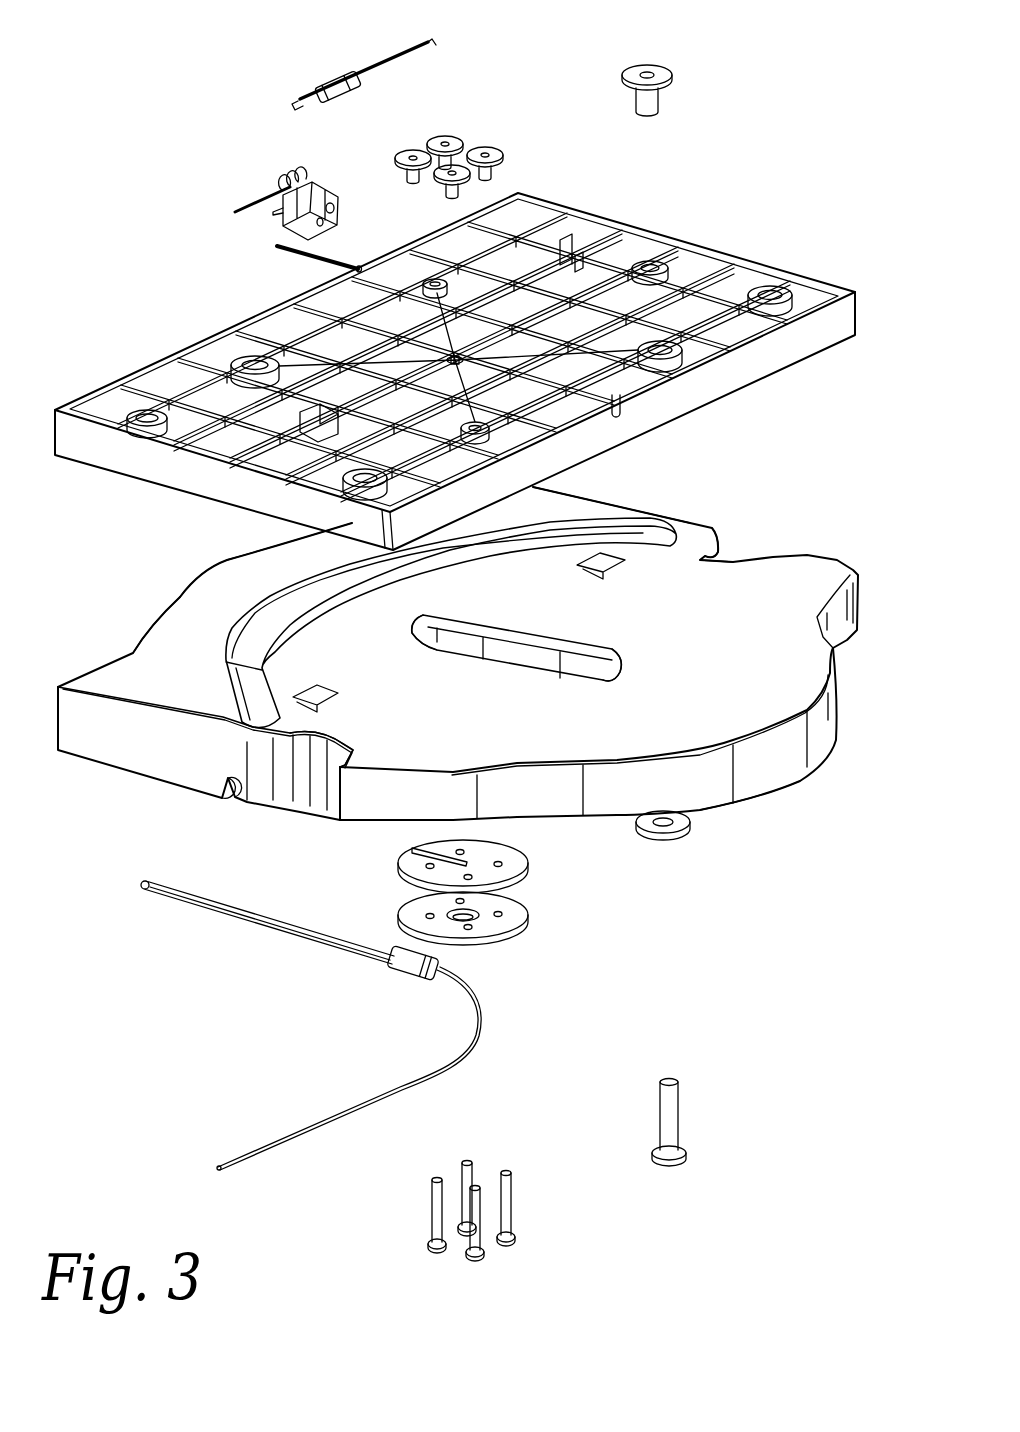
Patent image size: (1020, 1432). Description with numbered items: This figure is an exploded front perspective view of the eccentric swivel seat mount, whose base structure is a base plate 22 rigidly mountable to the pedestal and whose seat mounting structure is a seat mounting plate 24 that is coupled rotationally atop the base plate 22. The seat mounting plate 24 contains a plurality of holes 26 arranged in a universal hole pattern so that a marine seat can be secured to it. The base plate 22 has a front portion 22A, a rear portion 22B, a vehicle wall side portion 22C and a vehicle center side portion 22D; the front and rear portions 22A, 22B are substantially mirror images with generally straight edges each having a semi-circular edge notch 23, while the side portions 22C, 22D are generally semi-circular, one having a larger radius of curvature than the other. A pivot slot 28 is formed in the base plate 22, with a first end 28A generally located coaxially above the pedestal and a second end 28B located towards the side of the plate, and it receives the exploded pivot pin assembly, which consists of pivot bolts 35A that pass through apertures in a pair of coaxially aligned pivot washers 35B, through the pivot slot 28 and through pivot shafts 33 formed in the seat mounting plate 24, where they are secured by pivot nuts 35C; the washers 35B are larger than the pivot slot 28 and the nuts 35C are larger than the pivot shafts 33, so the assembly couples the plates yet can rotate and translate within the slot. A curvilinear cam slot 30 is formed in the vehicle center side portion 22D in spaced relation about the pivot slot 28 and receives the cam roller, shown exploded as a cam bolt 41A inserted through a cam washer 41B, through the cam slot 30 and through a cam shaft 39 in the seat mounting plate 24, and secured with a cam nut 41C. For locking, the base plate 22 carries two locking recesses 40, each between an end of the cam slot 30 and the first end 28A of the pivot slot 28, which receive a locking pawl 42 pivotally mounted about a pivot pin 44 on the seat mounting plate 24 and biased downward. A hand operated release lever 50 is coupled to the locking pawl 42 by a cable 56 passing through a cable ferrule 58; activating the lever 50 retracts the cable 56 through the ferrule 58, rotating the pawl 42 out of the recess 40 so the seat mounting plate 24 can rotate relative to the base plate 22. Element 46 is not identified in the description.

The base plate 22 is at (853, 610).
The front portion 22A is at (200, 703).
The rear portion 22B is at (637, 517).
The vehicle wall side portion 22C is at (757, 703).
The vehicle center side portion 22D is at (265, 567).
The semi-circular edge notch 23 is at (720, 553).
The seat mounting plate 24 is at (850, 311).
The holes 26 is at (251, 357).
The pivot slot 28 is at (561, 647).
The first end 28A is at (455, 612).
The second end 28B is at (615, 668).
The cam slot 30 is at (242, 633).
The pivot shafts 33 is at (450, 358).
The pivot bolts 35A is at (515, 1229).
The pivot washers 35B is at (530, 905).
The pivot nuts 35C is at (492, 148).
The cam shaft 39 is at (650, 265).
The locking recess 40 is at (623, 560).
The cam bolt 41A is at (675, 1150).
The cam washer 41B is at (691, 827).
The cam nut 41C is at (662, 95).
The locking pawl 42 is at (320, 190).
The pivot pin 44 is at (280, 248).
The spring rod 46 is at (242, 196).
The release lever 50 is at (224, 914).
The cable 56 is at (400, 60).
The cable ferrule 58 is at (337, 75).